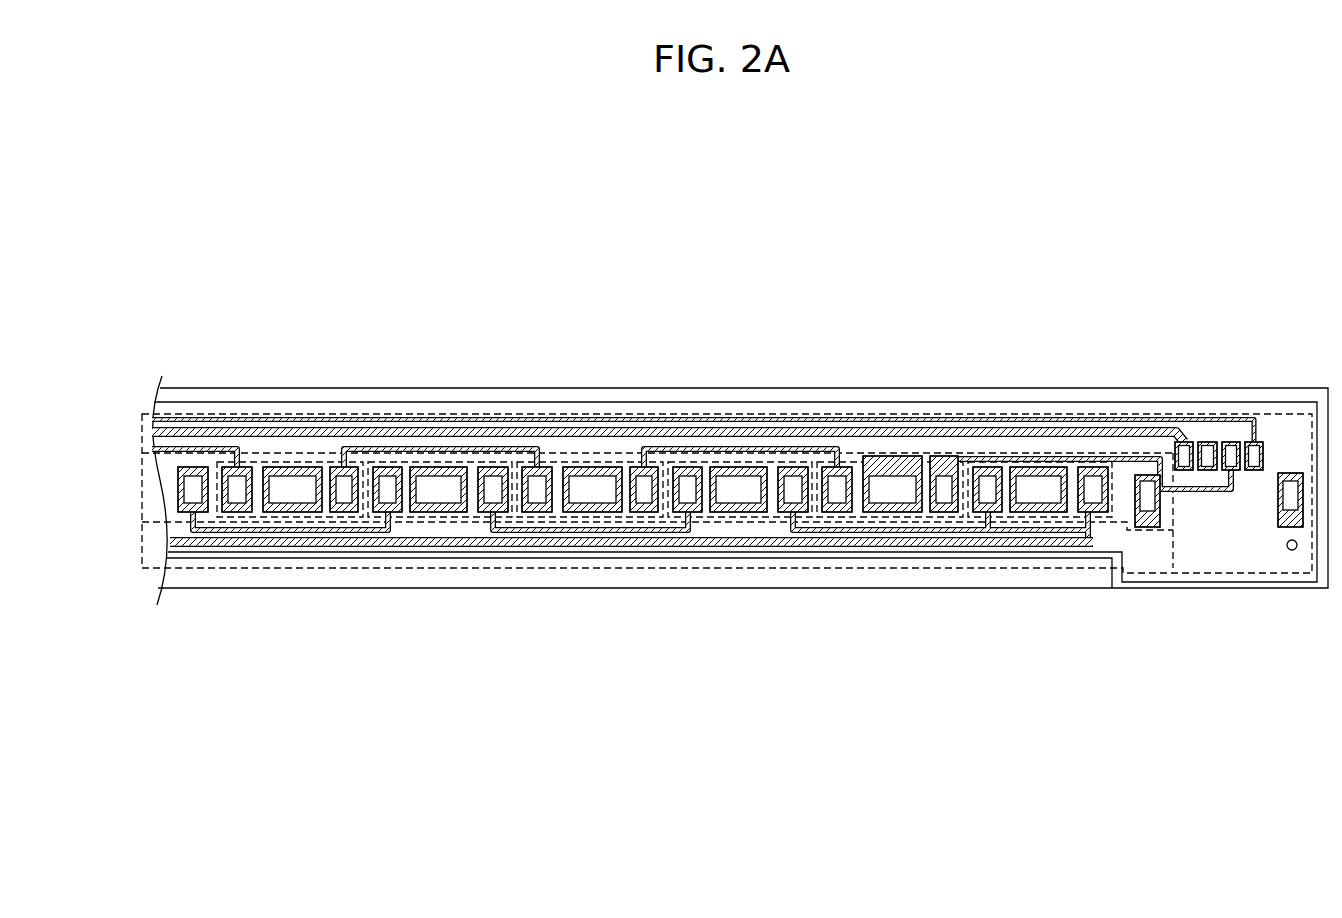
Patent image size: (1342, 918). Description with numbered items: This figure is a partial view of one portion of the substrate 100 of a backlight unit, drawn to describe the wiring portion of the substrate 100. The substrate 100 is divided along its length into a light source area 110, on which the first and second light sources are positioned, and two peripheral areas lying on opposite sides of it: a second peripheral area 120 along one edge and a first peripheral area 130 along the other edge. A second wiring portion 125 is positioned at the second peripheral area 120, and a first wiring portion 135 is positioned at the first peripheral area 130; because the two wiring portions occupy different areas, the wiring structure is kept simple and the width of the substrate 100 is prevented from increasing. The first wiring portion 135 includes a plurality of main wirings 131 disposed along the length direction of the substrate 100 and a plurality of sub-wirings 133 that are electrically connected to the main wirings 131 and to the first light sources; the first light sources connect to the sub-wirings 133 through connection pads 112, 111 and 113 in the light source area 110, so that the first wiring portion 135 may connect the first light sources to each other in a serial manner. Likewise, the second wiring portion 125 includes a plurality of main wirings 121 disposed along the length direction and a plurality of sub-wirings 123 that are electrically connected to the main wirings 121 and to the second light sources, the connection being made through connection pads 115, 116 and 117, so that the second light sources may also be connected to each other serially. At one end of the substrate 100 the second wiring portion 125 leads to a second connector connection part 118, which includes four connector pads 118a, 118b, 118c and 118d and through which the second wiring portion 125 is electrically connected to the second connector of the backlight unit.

The substrate 100 is at (727, 290).
The light source area 110 is at (148, 490).
The connection pad 111 is at (887, 490).
The connection pad 112 is at (838, 488).
The connection pad 113 is at (940, 490).
The connection pad 115 is at (1040, 490).
The connection pad 116 is at (992, 488).
The connection pad 117 is at (1088, 490).
The second connector connection part 118 is at (1322, 342).
The connector pad 118a is at (1183, 455).
The connector pad 118b is at (1208, 455).
The connector pad 118c is at (1230, 455).
The connector pad 118d is at (1257, 455).
The second peripheral area 120 is at (148, 437).
The main wiring 121 is at (360, 426).
The sub-wiring 123 is at (667, 443).
The second wiring portion 125 is at (533, 342).
The first peripheral area 130 is at (148, 545).
The main wiring 131 is at (325, 538).
The sub-wiring 133 is at (837, 527).
The first wiring portion 135 is at (602, 667).